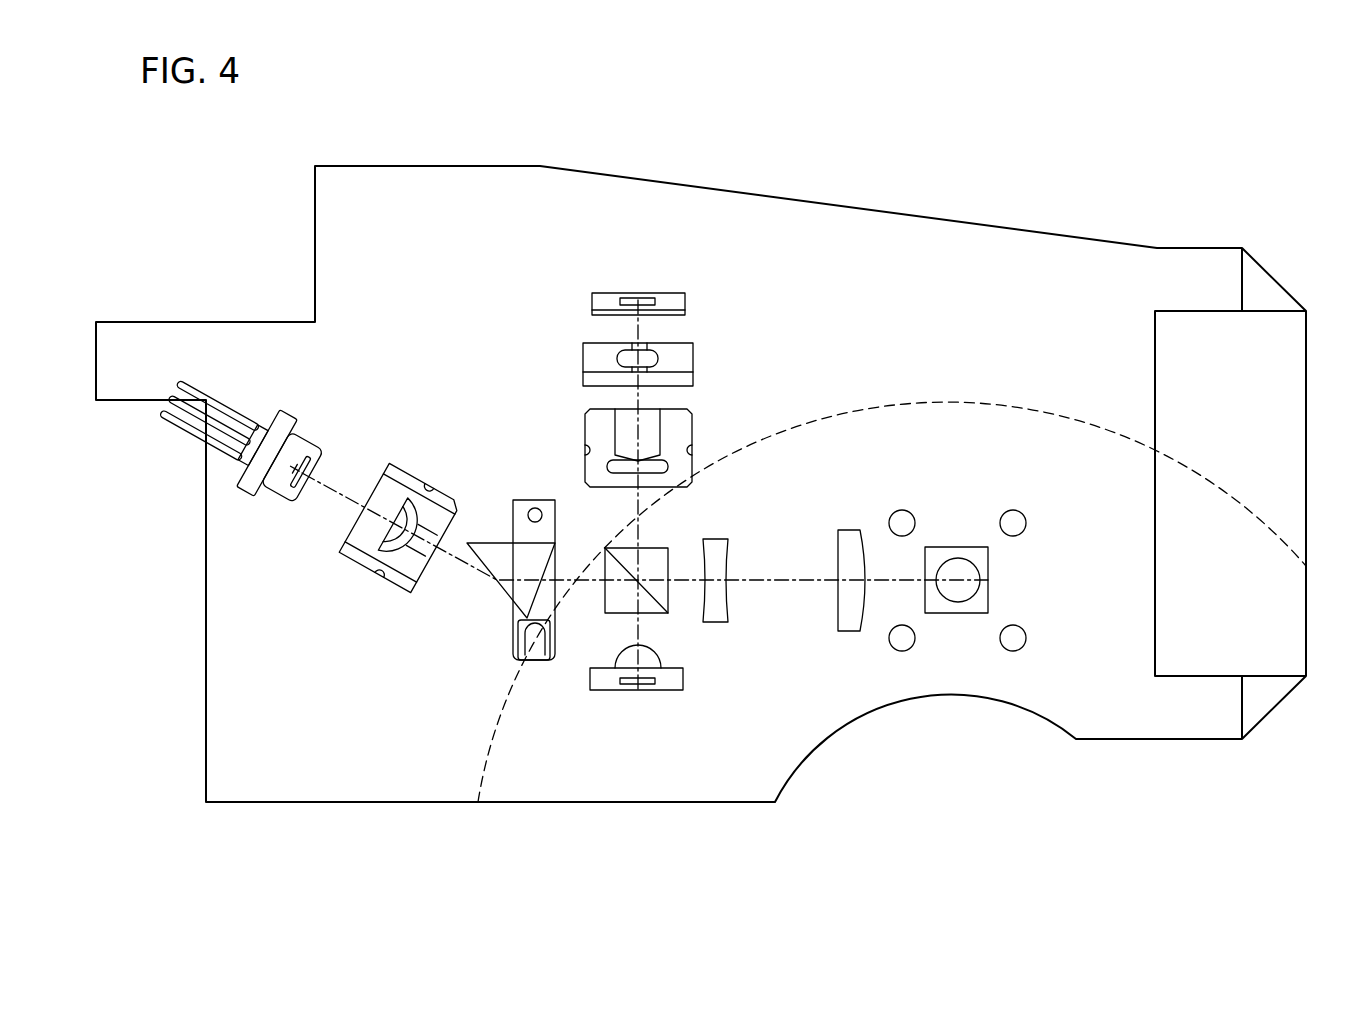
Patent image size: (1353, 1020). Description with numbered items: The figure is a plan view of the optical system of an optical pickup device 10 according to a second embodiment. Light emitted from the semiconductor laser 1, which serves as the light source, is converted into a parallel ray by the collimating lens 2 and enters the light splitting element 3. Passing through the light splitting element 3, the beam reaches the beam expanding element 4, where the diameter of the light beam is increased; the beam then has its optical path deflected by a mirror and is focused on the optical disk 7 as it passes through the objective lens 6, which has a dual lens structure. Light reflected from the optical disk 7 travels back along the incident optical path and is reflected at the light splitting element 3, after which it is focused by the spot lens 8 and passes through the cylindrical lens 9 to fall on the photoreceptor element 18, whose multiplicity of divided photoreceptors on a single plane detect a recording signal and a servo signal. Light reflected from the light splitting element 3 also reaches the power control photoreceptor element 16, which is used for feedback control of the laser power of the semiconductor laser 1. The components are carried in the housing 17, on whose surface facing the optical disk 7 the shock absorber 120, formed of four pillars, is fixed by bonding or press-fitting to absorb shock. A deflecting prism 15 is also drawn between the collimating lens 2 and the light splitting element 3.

The semiconductor laser 1 is at (247, 490).
The collimating lens 2 is at (408, 580).
The light splitting element 3 is at (655, 548).
The beam expanding element 4 is at (867, 634).
The objective lens 6 is at (960, 580).
The optical disk 7 is at (967, 592).
The spot lens 8 is at (655, 430).
The cylindrical lens 9 is at (675, 358).
The optical pickup device 10 is at (947, 137).
The prism 15 is at (497, 557).
The power control photoreceptor element 16 is at (600, 692).
The housing 17 is at (1001, 385).
The photoreceptor element 18 is at (676, 300).
The shock absorber 120 is at (902, 520).